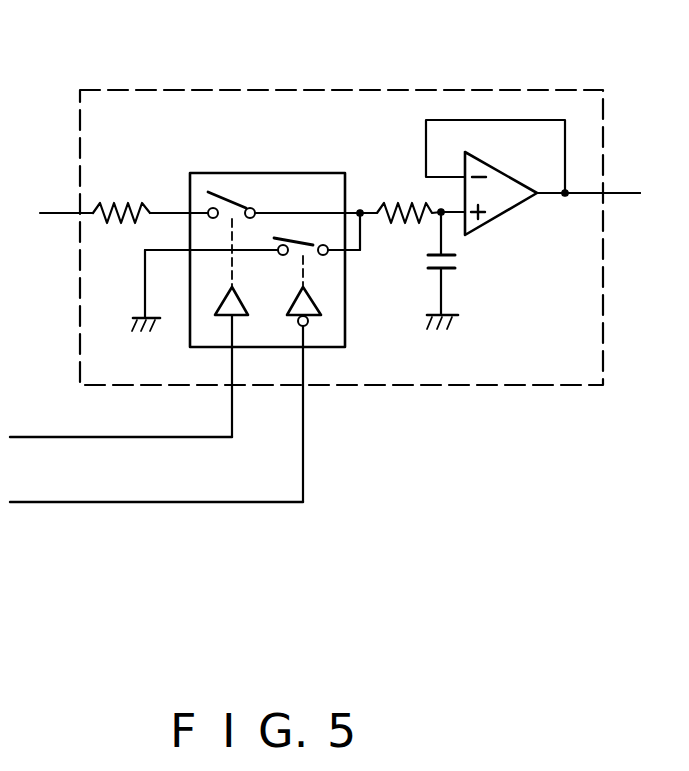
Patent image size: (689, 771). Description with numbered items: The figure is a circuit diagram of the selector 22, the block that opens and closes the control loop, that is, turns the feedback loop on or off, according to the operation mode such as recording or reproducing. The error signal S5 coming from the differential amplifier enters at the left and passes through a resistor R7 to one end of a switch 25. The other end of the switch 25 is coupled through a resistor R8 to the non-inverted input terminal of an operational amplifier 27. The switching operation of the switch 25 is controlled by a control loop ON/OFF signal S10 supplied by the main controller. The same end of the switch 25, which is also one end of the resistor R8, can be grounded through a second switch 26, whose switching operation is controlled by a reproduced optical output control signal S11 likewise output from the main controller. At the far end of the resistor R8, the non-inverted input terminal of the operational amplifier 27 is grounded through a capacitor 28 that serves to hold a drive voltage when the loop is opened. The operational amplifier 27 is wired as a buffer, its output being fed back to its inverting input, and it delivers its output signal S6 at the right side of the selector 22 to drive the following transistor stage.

The selector 22 is at (320, 90).
The switch 25 is at (234, 192).
The switch 26 is at (310, 257).
The operational amplifier 27 is at (504, 205).
The capacitor 28 is at (458, 260).
The resistor R7 is at (124, 212).
The resistor R8 is at (394, 206).
The error signal S5 is at (53, 213).
The output signal S6 is at (630, 193).
The control loop ON/OFF signal S10 is at (41, 437).
The reproduced optical output control signal S11 is at (41, 502).